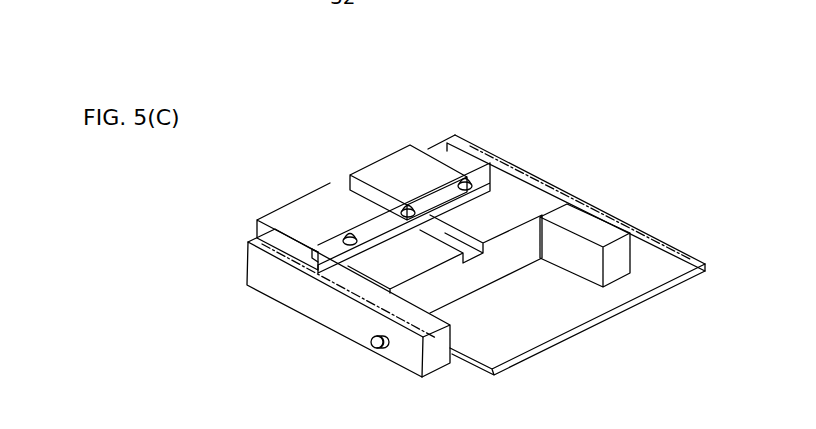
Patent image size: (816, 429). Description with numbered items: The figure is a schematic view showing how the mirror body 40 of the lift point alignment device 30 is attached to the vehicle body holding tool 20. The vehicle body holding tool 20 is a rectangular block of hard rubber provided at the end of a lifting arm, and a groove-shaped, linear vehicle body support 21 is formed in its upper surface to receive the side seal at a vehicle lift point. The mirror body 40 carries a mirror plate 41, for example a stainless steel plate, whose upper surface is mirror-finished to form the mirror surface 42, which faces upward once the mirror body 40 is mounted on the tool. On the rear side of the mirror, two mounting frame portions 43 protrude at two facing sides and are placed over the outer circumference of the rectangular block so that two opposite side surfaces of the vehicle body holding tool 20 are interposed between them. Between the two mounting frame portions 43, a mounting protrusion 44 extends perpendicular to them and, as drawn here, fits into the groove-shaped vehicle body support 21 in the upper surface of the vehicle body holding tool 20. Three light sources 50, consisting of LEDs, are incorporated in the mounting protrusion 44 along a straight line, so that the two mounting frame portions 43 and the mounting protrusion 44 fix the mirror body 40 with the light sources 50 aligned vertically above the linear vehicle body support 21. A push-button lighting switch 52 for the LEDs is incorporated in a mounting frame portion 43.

The vehicle body holding tool 20 is at (292, 198).
The vehicle body support 21 is at (298, 263).
The lift point alignment device 30 is at (566, 176).
The mirror body 40 is at (315, 320).
The mirror plate 41 is at (609, 313).
The mirror surface 42 is at (614, 290).
The mounting frame portion 43 is at (340, 328).
The mounting protrusion 44 is at (428, 205).
The light source 50 is at (466, 182).
The lighting switch 52 is at (378, 350).